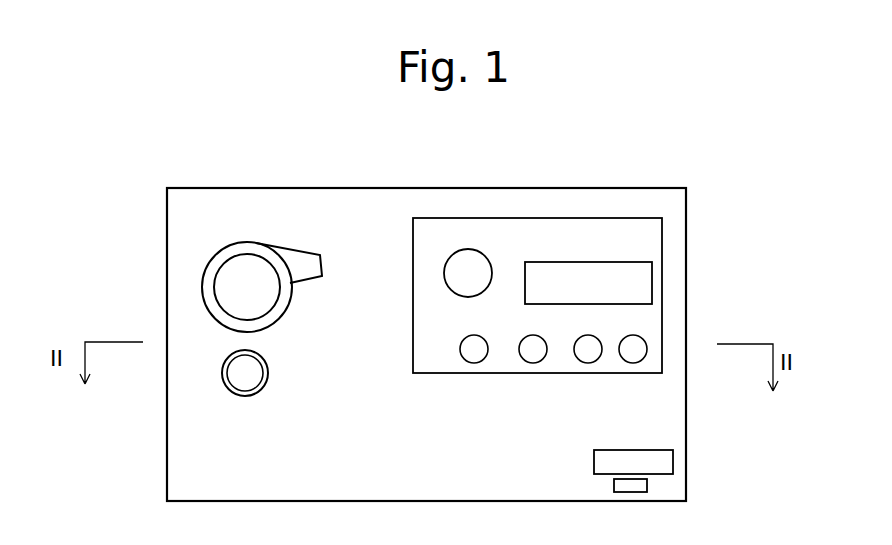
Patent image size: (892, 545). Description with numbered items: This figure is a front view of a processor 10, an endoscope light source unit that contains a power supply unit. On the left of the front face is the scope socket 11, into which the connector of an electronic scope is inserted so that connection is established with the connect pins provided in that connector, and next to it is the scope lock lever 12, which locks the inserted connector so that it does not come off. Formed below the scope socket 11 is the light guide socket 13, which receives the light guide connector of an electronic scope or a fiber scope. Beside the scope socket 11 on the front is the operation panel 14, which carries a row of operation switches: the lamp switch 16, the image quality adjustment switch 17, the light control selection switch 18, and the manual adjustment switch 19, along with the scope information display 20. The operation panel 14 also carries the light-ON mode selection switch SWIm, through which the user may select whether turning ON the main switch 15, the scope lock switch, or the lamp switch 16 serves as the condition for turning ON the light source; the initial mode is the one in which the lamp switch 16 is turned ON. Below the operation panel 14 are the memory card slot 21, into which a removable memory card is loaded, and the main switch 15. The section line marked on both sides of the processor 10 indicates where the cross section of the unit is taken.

The processor 10 is at (404, 184).
The scope socket 11 is at (245, 272).
The scope lock lever 12 is at (297, 263).
The light guide socket 13 is at (226, 373).
The operation panel 14 is at (619, 234).
The main switch 15 is at (646, 484).
The lamp switch 16 is at (468, 275).
The image quality adjustment switch 17 is at (533, 356).
The light control selection switch 18 is at (588, 356).
The manual adjustment switch 19 is at (633, 356).
The scope information display 20 is at (647, 283).
The memory card slot 21 is at (672, 458).
The light-ON mode selection switch SWIm is at (474, 356).